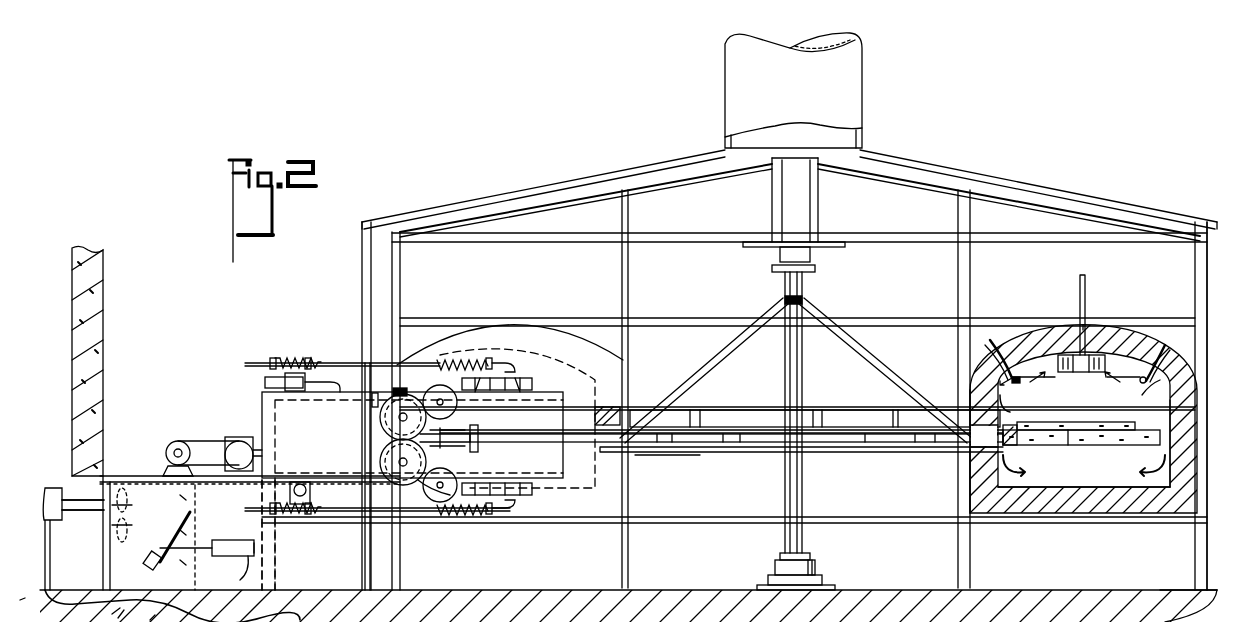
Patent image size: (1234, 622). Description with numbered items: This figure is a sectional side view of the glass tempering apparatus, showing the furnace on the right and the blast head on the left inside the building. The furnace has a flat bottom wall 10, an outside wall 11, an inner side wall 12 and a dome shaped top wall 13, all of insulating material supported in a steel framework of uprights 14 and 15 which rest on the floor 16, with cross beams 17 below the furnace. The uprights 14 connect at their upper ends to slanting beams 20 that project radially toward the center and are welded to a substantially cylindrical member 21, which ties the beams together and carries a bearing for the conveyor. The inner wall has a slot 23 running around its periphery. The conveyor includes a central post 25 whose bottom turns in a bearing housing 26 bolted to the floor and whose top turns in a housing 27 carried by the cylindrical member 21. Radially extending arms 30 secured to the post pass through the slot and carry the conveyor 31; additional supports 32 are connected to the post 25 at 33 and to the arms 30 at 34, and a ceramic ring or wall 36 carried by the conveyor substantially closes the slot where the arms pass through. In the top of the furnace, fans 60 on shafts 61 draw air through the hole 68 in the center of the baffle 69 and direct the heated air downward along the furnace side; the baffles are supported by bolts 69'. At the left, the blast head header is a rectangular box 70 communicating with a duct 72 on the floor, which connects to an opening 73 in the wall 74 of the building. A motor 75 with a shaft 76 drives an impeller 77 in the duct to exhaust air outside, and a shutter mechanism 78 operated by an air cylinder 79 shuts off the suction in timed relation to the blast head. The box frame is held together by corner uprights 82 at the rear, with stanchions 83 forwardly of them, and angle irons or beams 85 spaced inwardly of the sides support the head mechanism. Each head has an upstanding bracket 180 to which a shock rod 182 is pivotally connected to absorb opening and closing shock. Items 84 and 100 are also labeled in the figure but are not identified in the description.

The flat bottom wall 10 is at (1012, 515).
The outside wall 11 is at (1165, 508).
The inner side wall 12 is at (972, 393).
The dome shaped top wall 13 is at (1048, 330).
The uprights 14 is at (1198, 532).
The uprights 15 is at (962, 472).
The floor 16 is at (1122, 590).
The cross beams 17 is at (1068, 518).
The slanting beams 20 is at (1016, 190).
The cylindrical member 21 is at (800, 158).
The slot 23 is at (1008, 390).
The central post 25 is at (810, 302).
The bearing housing 26 is at (818, 564).
The housing 27 is at (818, 256).
The radially extending arms 30 is at (850, 430).
The conveyor 31 is at (1072, 420).
The additional supports 32 is at (767, 310).
The connection to post 33 is at (805, 301).
The connection to conveyor arms 34 is at (636, 410).
The circular ring or wall 36 is at (596, 416).
The fans 60 is at (1075, 372).
The shafts 61 is at (1086, 300).
The hole 68 is at (1135, 380).
The baffle 69 is at (1080, 391).
The bolts 69' is at (1086, 335).
The box 70 is at (295, 420).
The duct 72 is at (325, 562).
The opening 73 is at (100, 490).
The wall 74 is at (104, 366).
The motor 75 is at (55, 490).
The shaft 76 is at (88, 540).
The impeller 77 is at (132, 506).
The shutter mechanism 78 is at (194, 512).
The air cylinder 79 is at (230, 540).
The corner uprights 82 is at (277, 548).
The stanchions 83 is at (432, 550).
The lower roller 84 is at (328, 478).
The angle irons or beams 85 is at (340, 400).
The cylinder actuator 100 is at (262, 382).
The upstanding bracket 180 is at (512, 376).
The shock rod 182 is at (345, 362).